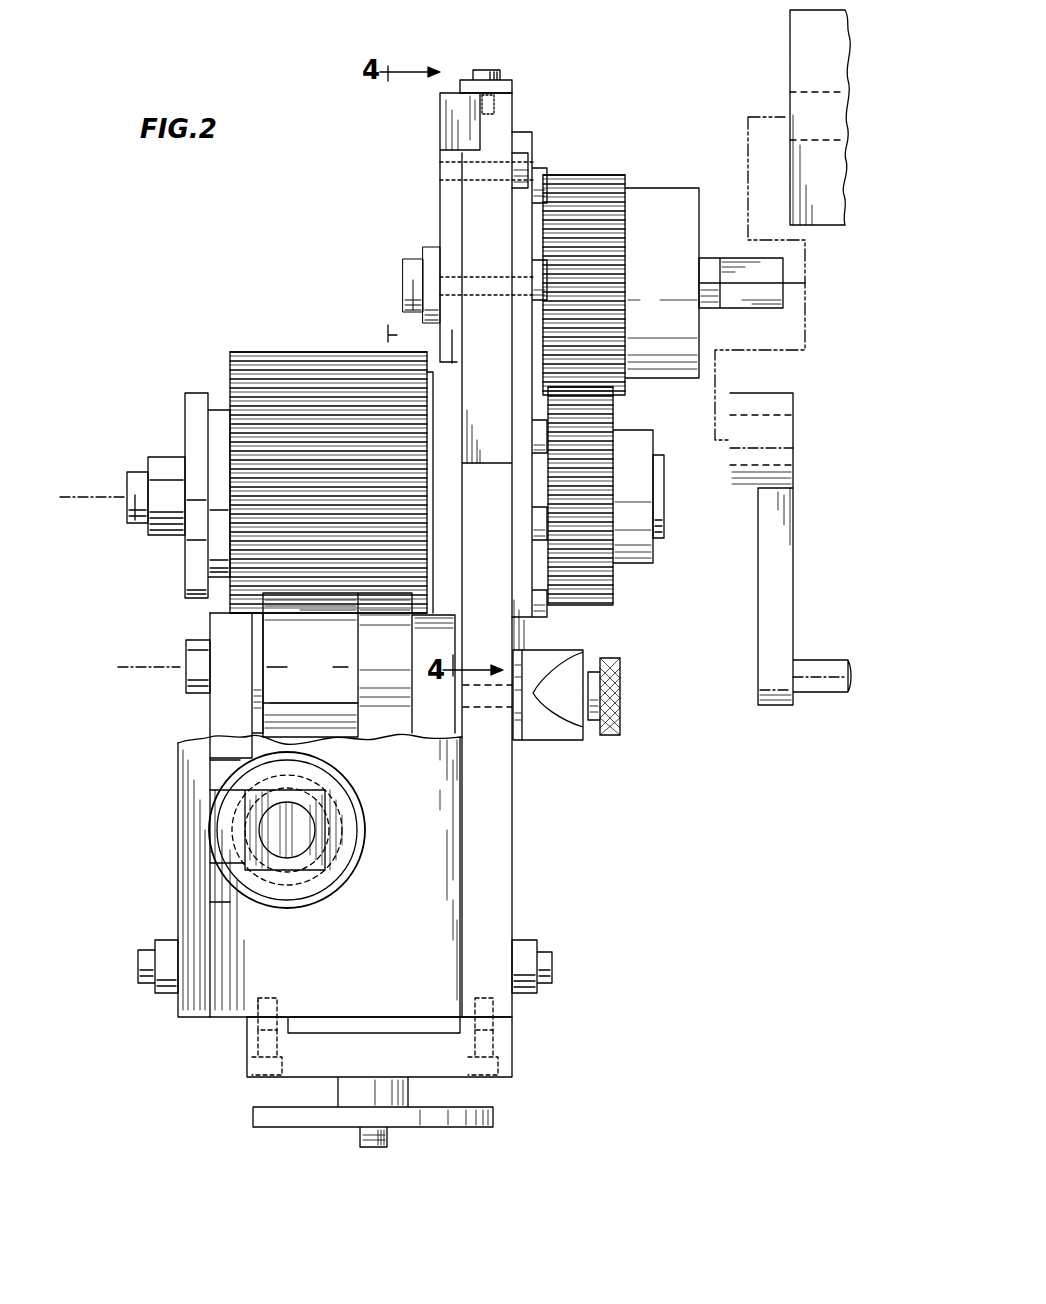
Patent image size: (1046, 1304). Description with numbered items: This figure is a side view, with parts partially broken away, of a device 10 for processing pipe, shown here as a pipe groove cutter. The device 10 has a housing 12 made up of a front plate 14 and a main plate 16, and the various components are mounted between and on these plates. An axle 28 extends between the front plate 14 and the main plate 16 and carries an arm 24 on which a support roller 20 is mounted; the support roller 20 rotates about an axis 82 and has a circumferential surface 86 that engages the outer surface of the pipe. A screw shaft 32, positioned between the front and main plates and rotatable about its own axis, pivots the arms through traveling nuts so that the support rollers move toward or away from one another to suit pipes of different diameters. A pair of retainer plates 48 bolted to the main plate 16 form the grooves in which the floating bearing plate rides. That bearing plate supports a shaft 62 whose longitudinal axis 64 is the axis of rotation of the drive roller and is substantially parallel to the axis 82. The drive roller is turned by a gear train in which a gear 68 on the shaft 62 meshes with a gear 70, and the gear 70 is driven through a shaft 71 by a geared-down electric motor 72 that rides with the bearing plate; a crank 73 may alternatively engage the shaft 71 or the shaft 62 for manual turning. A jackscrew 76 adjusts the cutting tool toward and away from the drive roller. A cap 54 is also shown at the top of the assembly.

The device 10 is at (228, 276).
The housing 12 is at (432, 948).
The front plate 14 is at (186, 796).
The main plate 16 is at (500, 862).
The support roller 20 is at (287, 710).
The arm 24 is at (218, 712).
The axle 28 is at (140, 962).
The screw shaft 32 is at (298, 828).
The retainer plates 48 is at (523, 137).
The cap 54 is at (508, 81).
The shaft 62 is at (137, 525).
The longitudinal axis 64 is at (105, 497).
The gear 68 is at (605, 595).
The gear 70 is at (586, 182).
The shaft 71 is at (752, 273).
The electric motor 72 is at (798, 55).
The crank 73 is at (765, 586).
The jackscrew 76 is at (493, 1118).
The axis 82 is at (155, 668).
The circumferential surface 86 is at (298, 605).